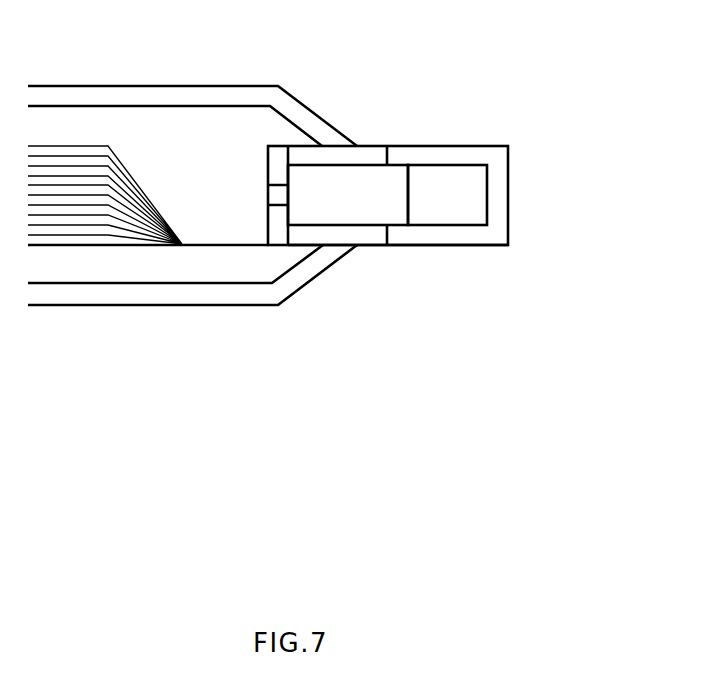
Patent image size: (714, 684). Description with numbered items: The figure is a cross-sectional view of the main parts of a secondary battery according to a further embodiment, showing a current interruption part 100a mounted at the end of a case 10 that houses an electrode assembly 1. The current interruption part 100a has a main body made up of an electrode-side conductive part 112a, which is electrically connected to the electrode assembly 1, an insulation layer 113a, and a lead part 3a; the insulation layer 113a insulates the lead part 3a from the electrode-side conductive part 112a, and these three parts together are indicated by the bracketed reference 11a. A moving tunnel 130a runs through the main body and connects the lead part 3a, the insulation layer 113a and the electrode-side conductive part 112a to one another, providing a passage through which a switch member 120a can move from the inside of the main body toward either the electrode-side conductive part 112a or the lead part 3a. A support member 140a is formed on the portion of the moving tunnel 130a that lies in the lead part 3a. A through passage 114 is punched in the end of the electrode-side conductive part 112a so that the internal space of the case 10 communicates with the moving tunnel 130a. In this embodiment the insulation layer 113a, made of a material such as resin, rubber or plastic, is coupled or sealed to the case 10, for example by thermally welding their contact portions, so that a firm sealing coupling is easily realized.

The electrode assembly 1 is at (83, 248).
The case 10 is at (150, 85).
The current interruption part 100a is at (562, 193).
The through passage 114 is at (275, 183).
The switch member 120a is at (367, 180).
The moving tunnel 130a is at (397, 160).
The support member 140a is at (447, 163).
The electrode-side conductive part 112a is at (278, 246).
The insulation layer 113a is at (375, 246).
The lead part 3a is at (470, 246).
The housing 11a is at (337, 347).